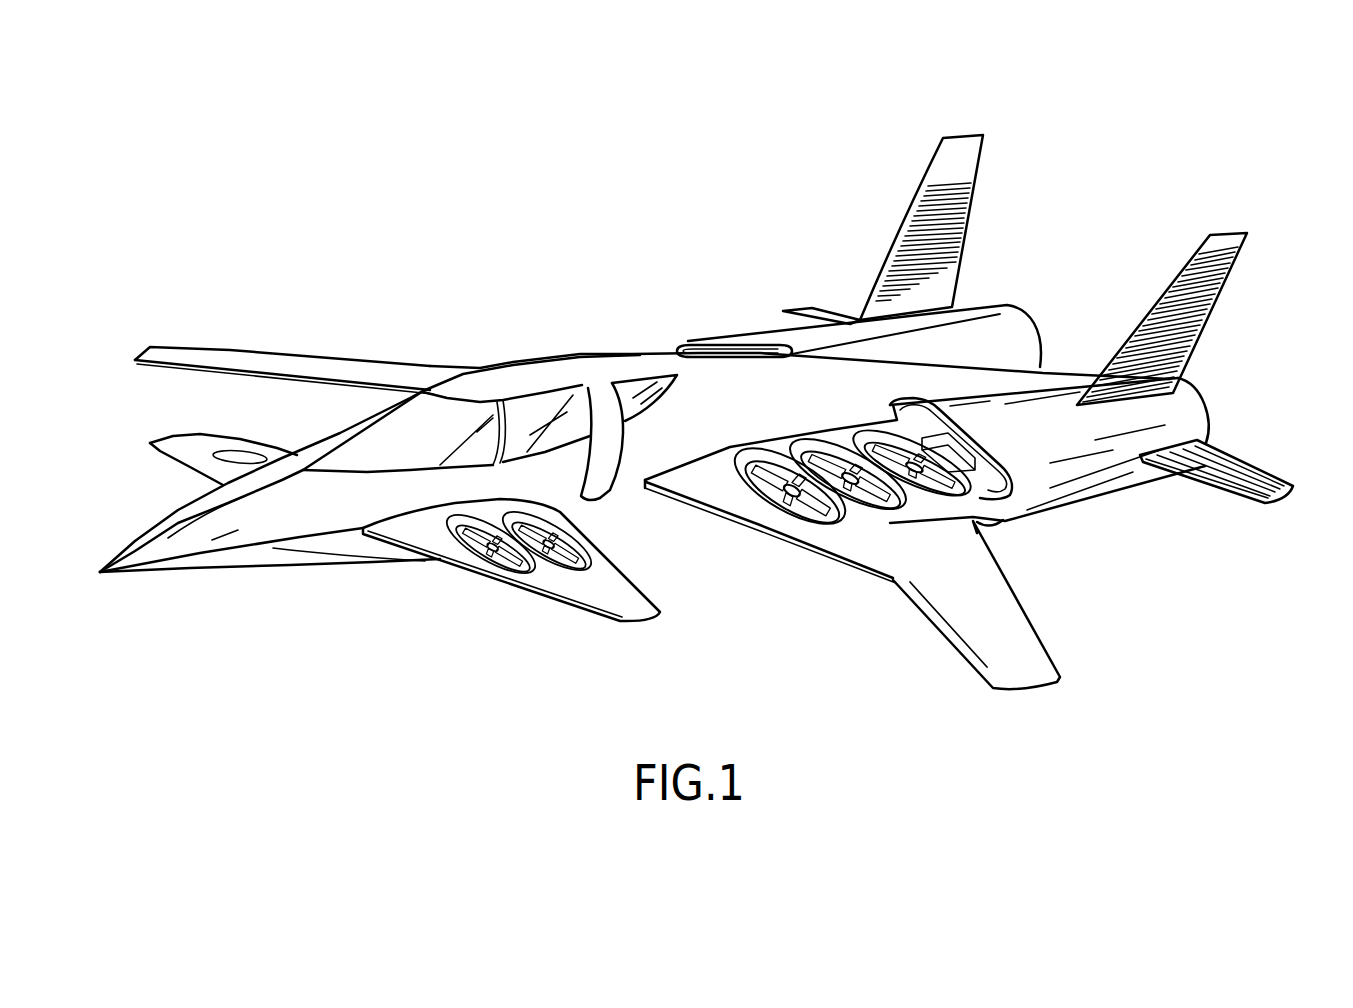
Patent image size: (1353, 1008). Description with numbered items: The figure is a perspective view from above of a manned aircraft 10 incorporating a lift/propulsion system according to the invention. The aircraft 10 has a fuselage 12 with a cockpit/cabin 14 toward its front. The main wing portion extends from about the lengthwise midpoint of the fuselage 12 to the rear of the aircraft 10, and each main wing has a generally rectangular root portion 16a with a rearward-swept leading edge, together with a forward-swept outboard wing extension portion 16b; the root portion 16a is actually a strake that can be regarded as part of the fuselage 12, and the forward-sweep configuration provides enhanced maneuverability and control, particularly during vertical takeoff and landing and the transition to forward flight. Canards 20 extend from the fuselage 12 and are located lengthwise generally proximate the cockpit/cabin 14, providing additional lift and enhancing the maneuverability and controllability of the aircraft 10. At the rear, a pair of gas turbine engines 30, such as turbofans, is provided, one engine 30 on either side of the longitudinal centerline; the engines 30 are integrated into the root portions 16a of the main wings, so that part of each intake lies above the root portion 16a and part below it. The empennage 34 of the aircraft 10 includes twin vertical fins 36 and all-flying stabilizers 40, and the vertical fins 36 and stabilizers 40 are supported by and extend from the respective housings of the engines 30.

The aircraft 10 is at (468, 196).
The fuselage 12 is at (617, 503).
The cockpit/cabin 14 is at (296, 411).
The root portion 16a is at (764, 536).
The outboard wing extension portion 16b is at (937, 645).
The canard 20 is at (535, 596).
The gas turbine engine 30 is at (1054, 538).
The empennage 34 is at (1236, 403).
The vertical fin 36 is at (977, 168).
The stabilizer 40 is at (1223, 484).